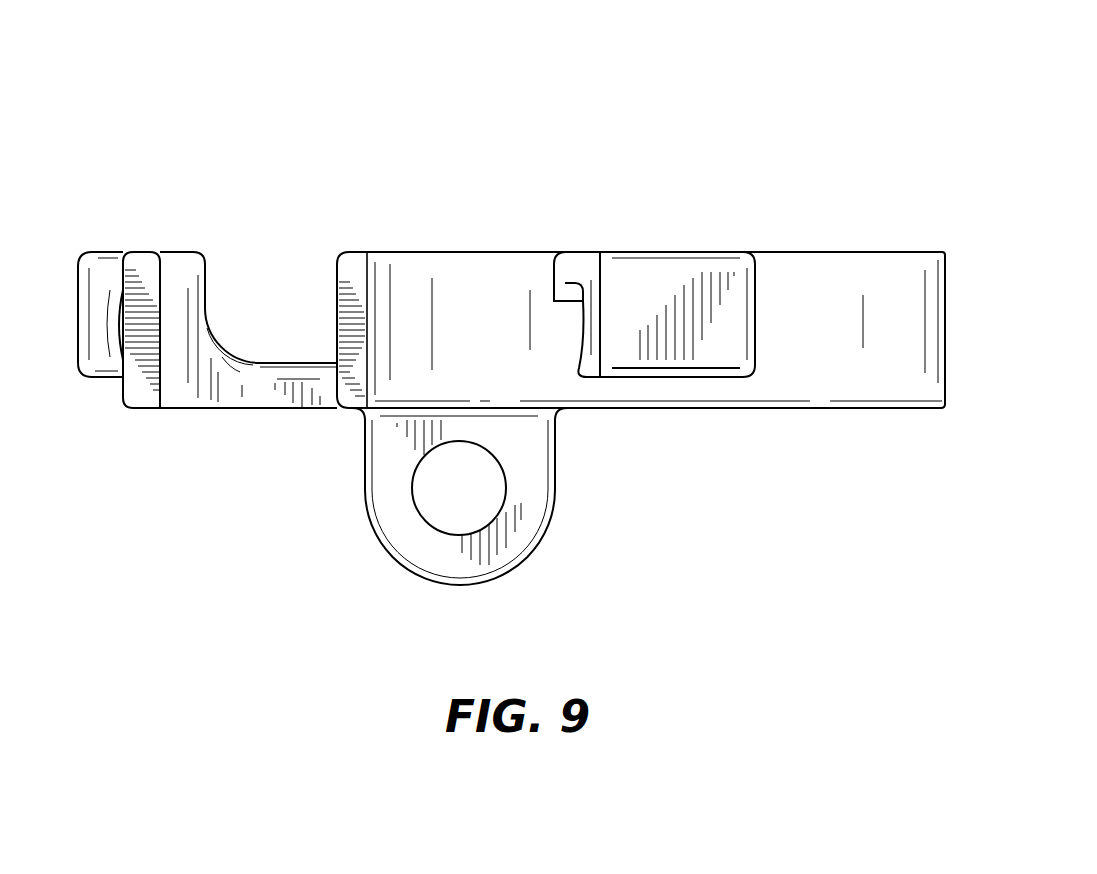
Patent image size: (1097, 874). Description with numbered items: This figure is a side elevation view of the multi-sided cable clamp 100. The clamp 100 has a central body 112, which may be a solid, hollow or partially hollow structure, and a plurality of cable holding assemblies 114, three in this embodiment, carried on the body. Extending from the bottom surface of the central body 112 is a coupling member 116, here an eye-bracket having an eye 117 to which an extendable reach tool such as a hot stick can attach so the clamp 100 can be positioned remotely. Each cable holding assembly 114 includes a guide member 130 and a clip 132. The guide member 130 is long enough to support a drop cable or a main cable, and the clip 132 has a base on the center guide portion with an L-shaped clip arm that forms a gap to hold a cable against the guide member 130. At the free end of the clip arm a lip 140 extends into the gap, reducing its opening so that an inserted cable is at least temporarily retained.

The clamp 100 is at (642, 91).
The central body 112 is at (593, 418).
The cable holding assembly 114 is at (192, 227).
The coupling member 116 is at (365, 522).
The eye 117 is at (459, 517).
The guide member 130 is at (116, 396).
The clip 132 is at (99, 241).
The lip 140 is at (575, 372).